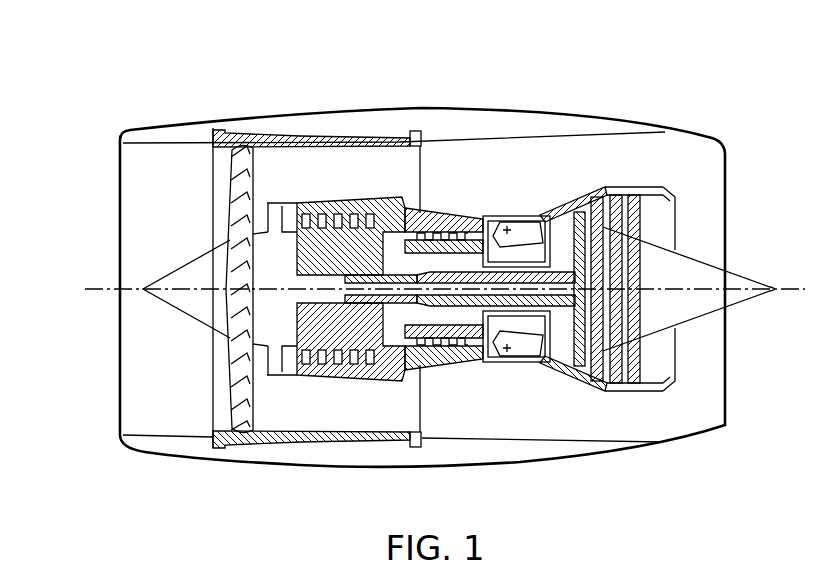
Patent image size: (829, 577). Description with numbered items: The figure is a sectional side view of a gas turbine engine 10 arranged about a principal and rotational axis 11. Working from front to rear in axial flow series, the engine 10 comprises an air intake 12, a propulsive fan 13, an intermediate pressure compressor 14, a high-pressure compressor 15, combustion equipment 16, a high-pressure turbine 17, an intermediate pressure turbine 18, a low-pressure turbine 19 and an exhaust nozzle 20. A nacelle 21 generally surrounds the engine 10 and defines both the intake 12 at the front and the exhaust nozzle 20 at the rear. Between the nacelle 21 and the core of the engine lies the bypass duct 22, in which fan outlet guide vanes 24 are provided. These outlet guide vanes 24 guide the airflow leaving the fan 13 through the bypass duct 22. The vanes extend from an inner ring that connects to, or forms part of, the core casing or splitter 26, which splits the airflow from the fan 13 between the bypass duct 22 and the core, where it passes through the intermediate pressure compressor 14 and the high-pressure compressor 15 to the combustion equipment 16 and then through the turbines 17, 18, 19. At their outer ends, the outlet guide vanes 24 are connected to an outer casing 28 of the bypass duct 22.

The gas turbine engine 10 is at (93, 177).
The principal and rotational axis 11 is at (122, 282).
The air intake 12 is at (178, 144).
The propulsive fan 13 is at (230, 390).
The intermediate pressure compressor 14 is at (355, 366).
The high-pressure compressor 15 is at (450, 217).
The combustion equipment 16 is at (497, 351).
The high-pressure turbine 17 is at (548, 358).
The intermediate pressure turbine 18 is at (573, 207).
The low-pressure turbine 19 is at (587, 378).
The exhaust nozzle 20 is at (727, 410).
The nacelle 21 is at (560, 115).
The bypass duct 22 is at (390, 187).
The fan outlet guide vanes 24 is at (314, 200).
The splitter 26 is at (272, 196).
The outer casing 28 is at (315, 204).